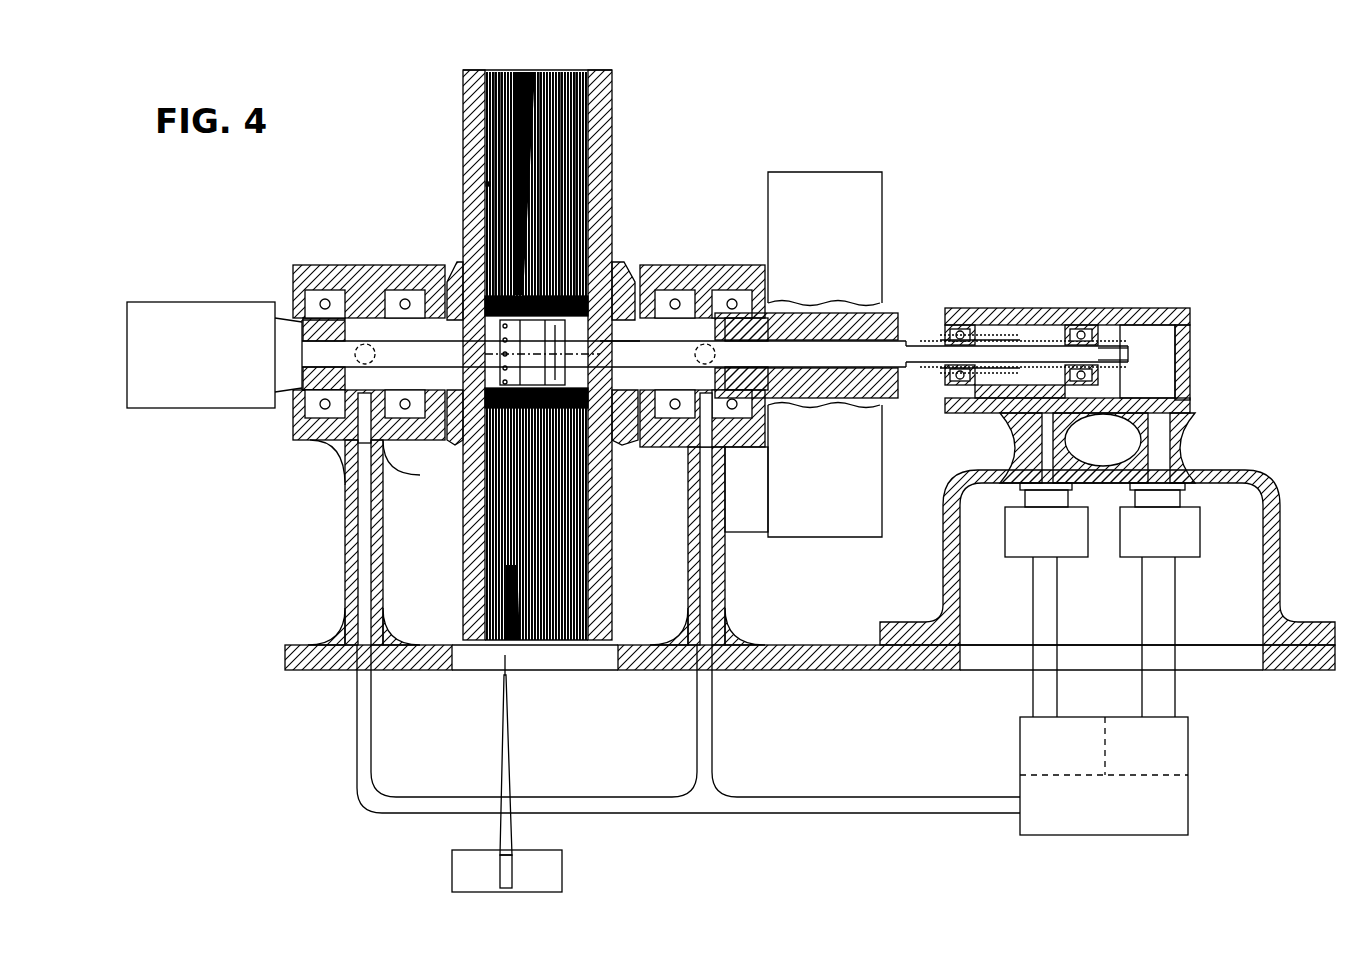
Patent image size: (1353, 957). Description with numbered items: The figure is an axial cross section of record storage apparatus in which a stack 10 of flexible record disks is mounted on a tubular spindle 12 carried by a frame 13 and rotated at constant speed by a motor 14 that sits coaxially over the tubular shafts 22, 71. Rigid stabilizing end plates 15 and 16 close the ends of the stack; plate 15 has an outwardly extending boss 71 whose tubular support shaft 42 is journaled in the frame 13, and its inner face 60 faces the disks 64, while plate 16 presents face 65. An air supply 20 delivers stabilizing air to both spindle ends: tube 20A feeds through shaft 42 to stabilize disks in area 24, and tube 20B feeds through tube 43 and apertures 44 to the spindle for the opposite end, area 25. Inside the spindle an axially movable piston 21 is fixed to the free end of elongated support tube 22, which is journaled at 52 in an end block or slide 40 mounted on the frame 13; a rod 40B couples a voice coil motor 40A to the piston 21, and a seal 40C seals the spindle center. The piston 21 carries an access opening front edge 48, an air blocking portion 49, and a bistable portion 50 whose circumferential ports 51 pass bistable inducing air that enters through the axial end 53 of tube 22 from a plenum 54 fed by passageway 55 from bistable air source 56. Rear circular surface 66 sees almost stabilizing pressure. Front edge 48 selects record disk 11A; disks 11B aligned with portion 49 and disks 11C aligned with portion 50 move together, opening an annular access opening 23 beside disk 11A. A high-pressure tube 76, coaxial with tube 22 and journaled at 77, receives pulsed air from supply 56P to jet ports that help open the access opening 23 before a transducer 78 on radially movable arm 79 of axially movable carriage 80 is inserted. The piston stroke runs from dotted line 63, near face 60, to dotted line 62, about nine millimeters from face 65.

The stack 10 is at (592, 46).
The record disk 11A is at (500, 88).
The first set of disks 11B is at (523, 68).
The bistable region disks 11C is at (535, 68).
The tubular spindle 12 is at (600, 268).
The frame 13 is at (345, 470).
The motor 14 is at (872, 240).
The stabilizing end plate 15 is at (472, 120).
The stabilizing end plate 16 is at (600, 120).
The air supply 20 is at (1200, 805).
The air supply tube 20A is at (372, 750).
The air supply tube 20B is at (713, 735).
The piston 21 is at (560, 364).
The support tube 22 is at (906, 345).
The annular access opening 23 is at (508, 68).
The stabilized area 24 is at (494, 66).
The stabilized area 25 is at (540, 68).
The end block 40 is at (1190, 330).
The voice coil motor 40A is at (200, 316).
The rod 40B is at (290, 354).
The seal 40C is at (310, 385).
The tubular support shaft 42 is at (425, 440).
The tube 43 is at (741, 546).
The apertures 44 is at (708, 392).
The access opening front edge 48 is at (505, 332).
The air blocking portion 49 is at (503, 373).
The bistable portion 50 is at (560, 352).
The ports 51 is at (520, 345).
The journal 52 is at (962, 322).
The axial end 53 is at (1018, 330).
The plenum 54 is at (992, 405).
The passageway 55 is at (1047, 436).
The bistable air source 56 is at (1020, 745).
The pulsed air supply 56P is at (1188, 745).
The face 60 is at (490, 160).
The dotted line 62 is at (632, 442).
The dotted line 63 is at (455, 442).
The disks adjacent face 60 64 is at (482, 186).
The face 65 is at (583, 166).
The rear circular surface 66 is at (612, 368).
The boss 71 is at (449, 266).
The high-pressure air transmitting tube 76 is at (1115, 345).
The journal 77 is at (1085, 322).
The transducer 78 is at (503, 682).
The arm 79 is at (508, 782).
The carriage 80 is at (562, 866).